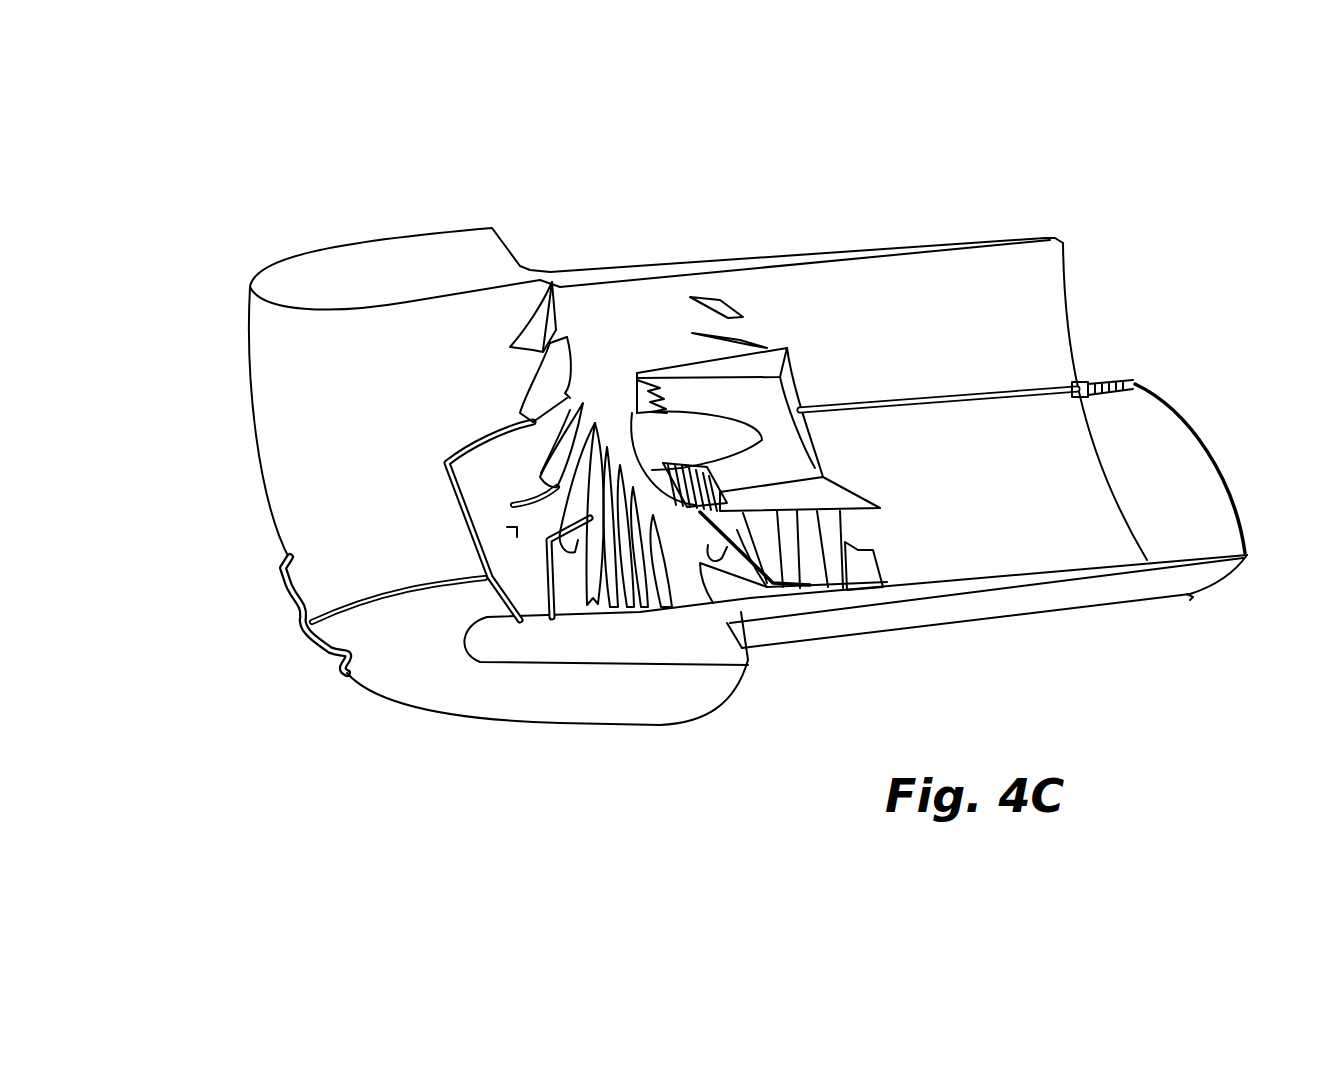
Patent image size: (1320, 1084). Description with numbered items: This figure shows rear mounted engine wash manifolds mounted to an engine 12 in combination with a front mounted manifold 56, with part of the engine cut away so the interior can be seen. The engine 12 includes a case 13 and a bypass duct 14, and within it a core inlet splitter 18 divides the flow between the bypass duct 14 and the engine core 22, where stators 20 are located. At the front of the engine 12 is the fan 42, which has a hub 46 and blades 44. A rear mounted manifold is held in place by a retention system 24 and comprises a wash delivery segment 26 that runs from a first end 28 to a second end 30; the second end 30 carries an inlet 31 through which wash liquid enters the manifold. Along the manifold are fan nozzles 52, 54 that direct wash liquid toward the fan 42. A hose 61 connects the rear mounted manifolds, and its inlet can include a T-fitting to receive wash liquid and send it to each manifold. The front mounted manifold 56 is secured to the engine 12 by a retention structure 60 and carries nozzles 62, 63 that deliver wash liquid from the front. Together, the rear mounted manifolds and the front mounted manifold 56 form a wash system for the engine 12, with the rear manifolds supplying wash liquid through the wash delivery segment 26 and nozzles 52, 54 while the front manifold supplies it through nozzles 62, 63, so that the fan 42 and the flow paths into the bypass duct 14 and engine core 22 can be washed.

The engine 12 is at (228, 472).
The case 13 is at (995, 583).
The bypass duct 14 is at (839, 531).
The core inlet splitter 18 is at (667, 505).
The stators 20 is at (677, 473).
The engine core 22 is at (755, 429).
The retention system 24 is at (1094, 420).
The wash delivery segment 26 is at (903, 405).
The first end 28 is at (674, 546).
The second end 30 is at (1122, 355).
The inlet 31 is at (1137, 383).
The fan 42 is at (370, 416).
The blades 44 is at (523, 320).
The hub 46 is at (997, 360).
The fan nozzle 52 is at (737, 530).
The fan nozzle 54 is at (717, 548).
The front mounted manifold 56 is at (303, 535).
The retention structure 60 is at (268, 631).
The hose 61 is at (1217, 468).
The nozzle 62 is at (533, 424).
The nozzle 63 is at (477, 550).